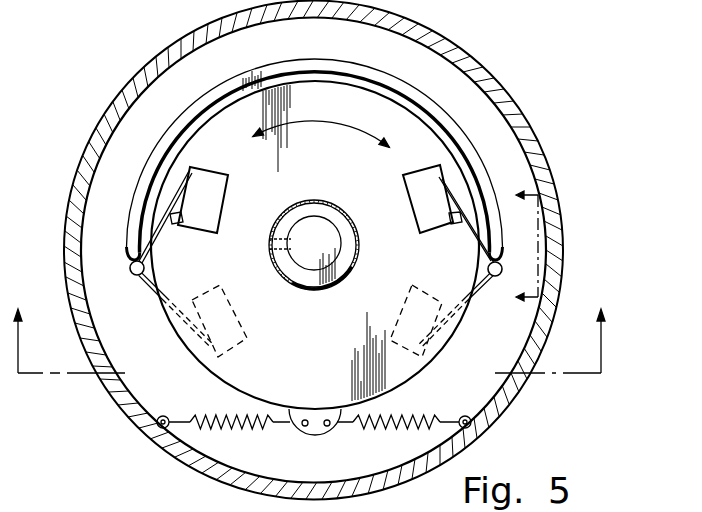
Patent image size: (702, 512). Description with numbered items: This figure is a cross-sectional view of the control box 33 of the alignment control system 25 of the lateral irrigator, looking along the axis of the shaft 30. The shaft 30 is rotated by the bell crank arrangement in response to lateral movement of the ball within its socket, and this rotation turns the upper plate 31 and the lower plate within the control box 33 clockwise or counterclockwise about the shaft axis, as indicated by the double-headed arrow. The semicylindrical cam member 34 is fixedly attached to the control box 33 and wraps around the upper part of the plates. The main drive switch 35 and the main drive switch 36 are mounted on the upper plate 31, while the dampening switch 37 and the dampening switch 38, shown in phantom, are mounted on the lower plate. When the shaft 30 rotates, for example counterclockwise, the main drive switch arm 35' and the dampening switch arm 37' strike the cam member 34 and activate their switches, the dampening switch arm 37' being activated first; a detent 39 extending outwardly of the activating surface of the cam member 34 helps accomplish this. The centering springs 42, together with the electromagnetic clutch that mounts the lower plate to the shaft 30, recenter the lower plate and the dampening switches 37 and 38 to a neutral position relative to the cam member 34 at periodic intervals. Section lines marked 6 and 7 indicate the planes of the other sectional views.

The alignment control system 25 is at (490, 30).
The control box 33 is at (505, 90).
The semicylindrical cam member 34 is at (300, 58).
The upper plate 31 is at (322, 361).
The shaft 30 is at (341, 243).
The main drive switch 36 is at (273, 185).
The main drive switch 35 is at (410, 199).
The main drive switch arm 35' is at (459, 222).
The dampening switch arm 37' is at (466, 310).
The dampening switch 37 is at (434, 329).
The dampening switch 38 is at (216, 357).
The detent 39 is at (130, 267).
The centering springs 42 is at (236, 428).
The section line 7- 7 is at (520, 245).
The section line 6- 6 is at (309, 330).